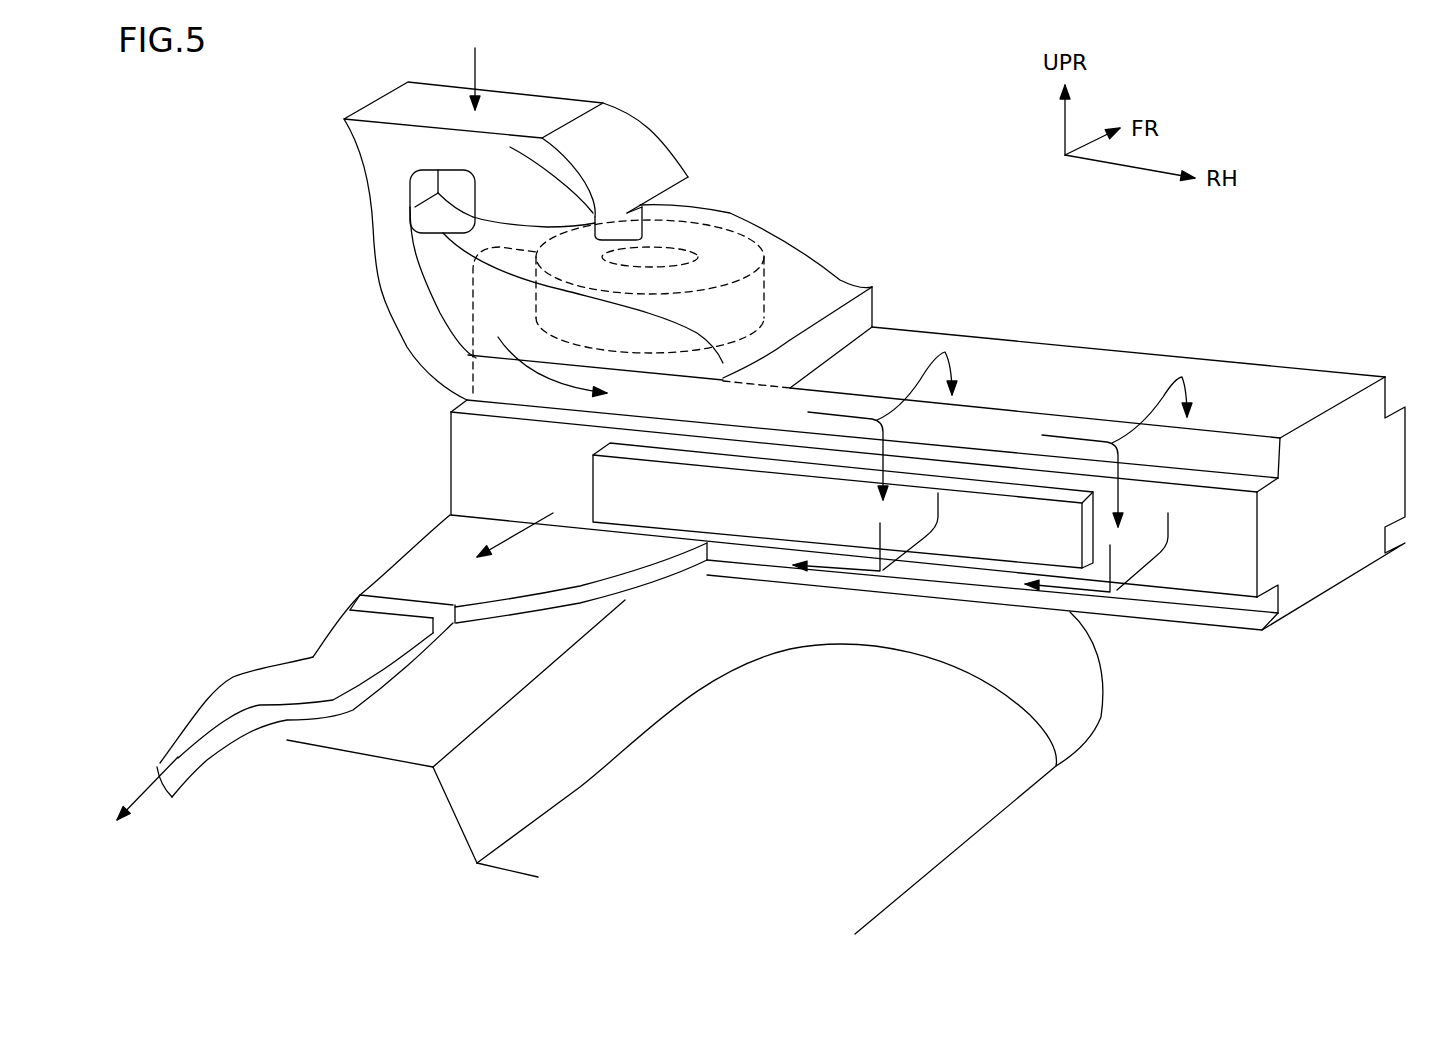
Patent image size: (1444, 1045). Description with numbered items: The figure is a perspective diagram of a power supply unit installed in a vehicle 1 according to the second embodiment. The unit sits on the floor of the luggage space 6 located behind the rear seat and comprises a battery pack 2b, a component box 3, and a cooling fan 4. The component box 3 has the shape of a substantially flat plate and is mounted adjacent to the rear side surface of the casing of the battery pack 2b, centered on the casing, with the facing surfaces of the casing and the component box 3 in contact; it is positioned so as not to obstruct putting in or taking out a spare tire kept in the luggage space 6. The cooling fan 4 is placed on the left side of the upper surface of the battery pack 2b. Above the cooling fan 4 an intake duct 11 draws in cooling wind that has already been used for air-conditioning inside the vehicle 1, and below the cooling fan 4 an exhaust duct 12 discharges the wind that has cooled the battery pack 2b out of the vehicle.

The vehicle 1 is at (324, 464).
The battery pack 2b is at (1062, 377).
The component box 3 is at (993, 517).
The cooling fan 4 is at (713, 240).
The luggage space 6 is at (453, 677).
The intake duct 11 is at (630, 137).
The exhaust duct 12 is at (300, 657).